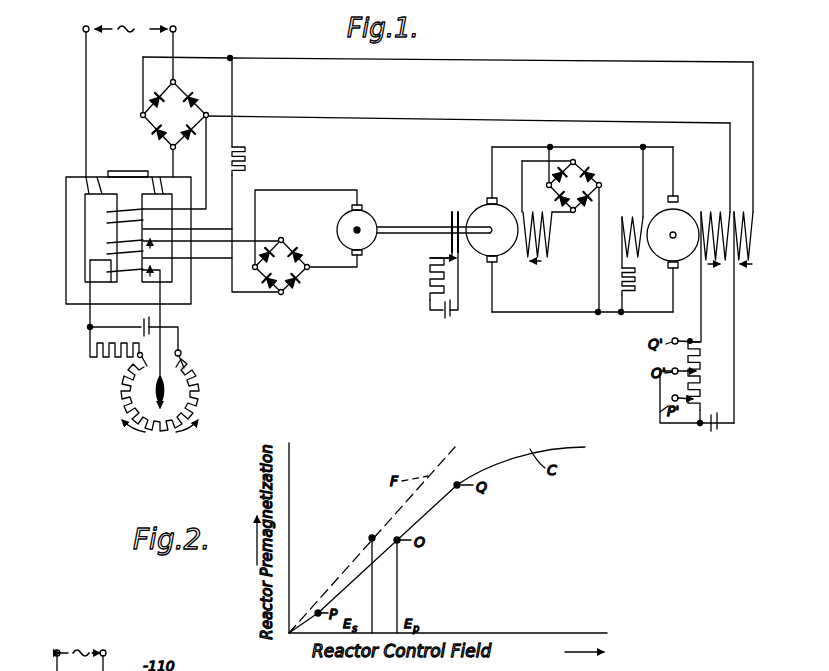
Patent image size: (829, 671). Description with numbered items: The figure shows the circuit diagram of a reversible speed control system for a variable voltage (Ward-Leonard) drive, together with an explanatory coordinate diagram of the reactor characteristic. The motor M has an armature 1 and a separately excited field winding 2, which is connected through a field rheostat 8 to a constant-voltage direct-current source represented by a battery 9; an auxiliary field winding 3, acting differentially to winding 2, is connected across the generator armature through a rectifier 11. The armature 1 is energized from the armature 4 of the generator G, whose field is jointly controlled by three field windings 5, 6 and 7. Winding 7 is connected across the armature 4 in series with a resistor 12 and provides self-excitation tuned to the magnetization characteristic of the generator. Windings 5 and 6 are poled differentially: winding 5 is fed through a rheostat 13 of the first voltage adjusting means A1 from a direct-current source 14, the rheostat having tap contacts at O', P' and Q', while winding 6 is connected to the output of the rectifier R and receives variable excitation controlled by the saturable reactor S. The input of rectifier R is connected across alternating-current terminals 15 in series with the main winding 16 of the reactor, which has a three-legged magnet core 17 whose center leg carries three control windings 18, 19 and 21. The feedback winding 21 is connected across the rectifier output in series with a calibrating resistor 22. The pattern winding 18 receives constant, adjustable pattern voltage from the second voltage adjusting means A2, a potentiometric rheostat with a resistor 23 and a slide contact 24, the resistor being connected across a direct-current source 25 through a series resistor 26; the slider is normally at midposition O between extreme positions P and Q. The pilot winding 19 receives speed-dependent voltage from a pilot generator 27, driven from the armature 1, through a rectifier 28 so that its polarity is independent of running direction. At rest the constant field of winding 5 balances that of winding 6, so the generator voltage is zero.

The armature 1 is at (484, 251).
The separately excited field winding 2 is at (449, 214).
The auxiliary field winding 3 is at (549, 239).
The armature 4 is at (662, 215).
The field winding 5 is at (727, 214).
The field winding 6 is at (755, 232).
The field winding 7 is at (634, 210).
The field rheostat 8 is at (430, 275).
The battery 9 is at (444, 320).
The rectifier 11 is at (558, 181).
The resistor 12 is at (634, 283).
The rheostat 13 is at (700, 371).
The direct-current source 14 is at (711, 415).
The alternating-current terminals 15 is at (82, 30).
The main winding 16 is at (97, 174).
The three-legged magnet core 17 is at (66, 289).
The pattern winding 18 is at (129, 277).
The pilot winding 19 is at (107, 246).
The feedback winding 21 is at (107, 212).
The calibrating resistor 22 is at (246, 163).
The resistor 23 is at (193, 384).
The slide contact 24 is at (169, 345).
The direct-current source 25 is at (143, 329).
The series resistor 26 is at (110, 352).
The pilot generator 27 is at (337, 217).
The rectifier 28 is at (296, 264).
The rectifier R is at (171, 106).
The saturable reactor S is at (52, 242).
The motor M is at (485, 217).
The generator G is at (699, 206).
The extreme position Q is at (182, 355).
The first voltage adjusting means A1 is at (646, 404).
The second voltage adjusting means A2 is at (112, 392).